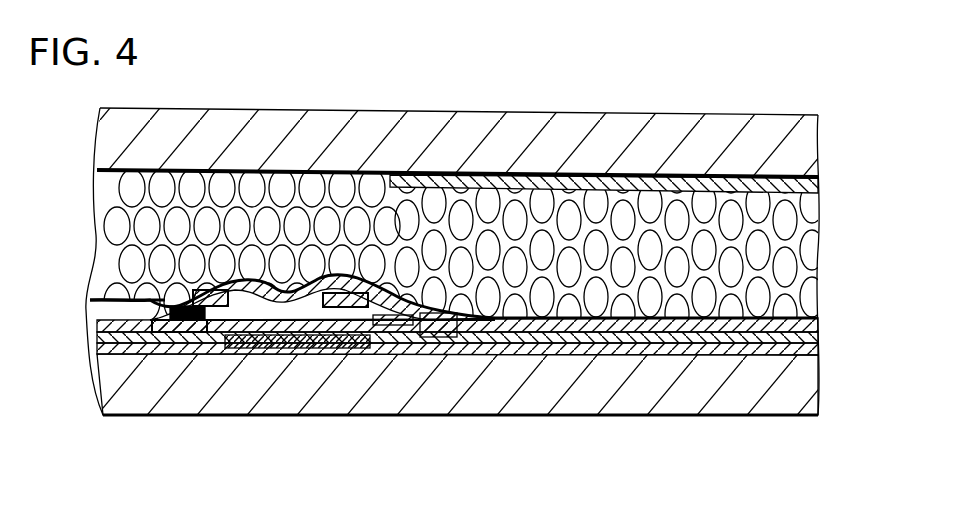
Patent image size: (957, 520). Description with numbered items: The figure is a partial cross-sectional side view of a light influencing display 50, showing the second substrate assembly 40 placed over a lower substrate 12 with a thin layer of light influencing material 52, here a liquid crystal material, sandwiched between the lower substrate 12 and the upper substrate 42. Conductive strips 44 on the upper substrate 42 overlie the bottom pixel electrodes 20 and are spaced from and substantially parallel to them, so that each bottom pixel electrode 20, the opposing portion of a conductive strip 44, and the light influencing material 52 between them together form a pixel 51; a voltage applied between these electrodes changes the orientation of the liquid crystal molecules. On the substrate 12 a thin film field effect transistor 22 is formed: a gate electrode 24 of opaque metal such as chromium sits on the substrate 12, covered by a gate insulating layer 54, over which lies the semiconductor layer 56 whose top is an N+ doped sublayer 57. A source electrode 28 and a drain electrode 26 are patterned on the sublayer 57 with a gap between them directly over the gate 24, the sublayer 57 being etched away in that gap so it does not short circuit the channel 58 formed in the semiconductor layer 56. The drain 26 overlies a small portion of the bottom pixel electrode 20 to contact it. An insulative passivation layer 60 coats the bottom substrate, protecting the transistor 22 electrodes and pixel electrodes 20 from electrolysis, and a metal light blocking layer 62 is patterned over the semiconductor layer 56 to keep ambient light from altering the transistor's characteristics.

The substrate 12 is at (808, 390).
The bottom pixel electrode 20 is at (820, 333).
The thin film field effect transistor 22 is at (462, 344).
The gate electrode 24 is at (270, 352).
The drain electrode 26 is at (423, 352).
The source electrode 28 is at (162, 318).
The second substrate assembly 40 is at (832, 145).
The upper substrate 42 is at (808, 161).
The conductive strip 44 is at (808, 185).
The light influencing display 50 is at (823, 106).
The pixel 51 is at (527, 110).
The light influencing material 52 is at (790, 242).
The gate insulating layer 54 is at (377, 352).
The semiconductor layer 56 is at (198, 352).
The N+ doped sublayer 57 is at (184, 349).
The field effect transistor channel 58 is at (267, 307).
The passivation layer 60 is at (275, 282).
The light blocking layer 62 is at (322, 287).